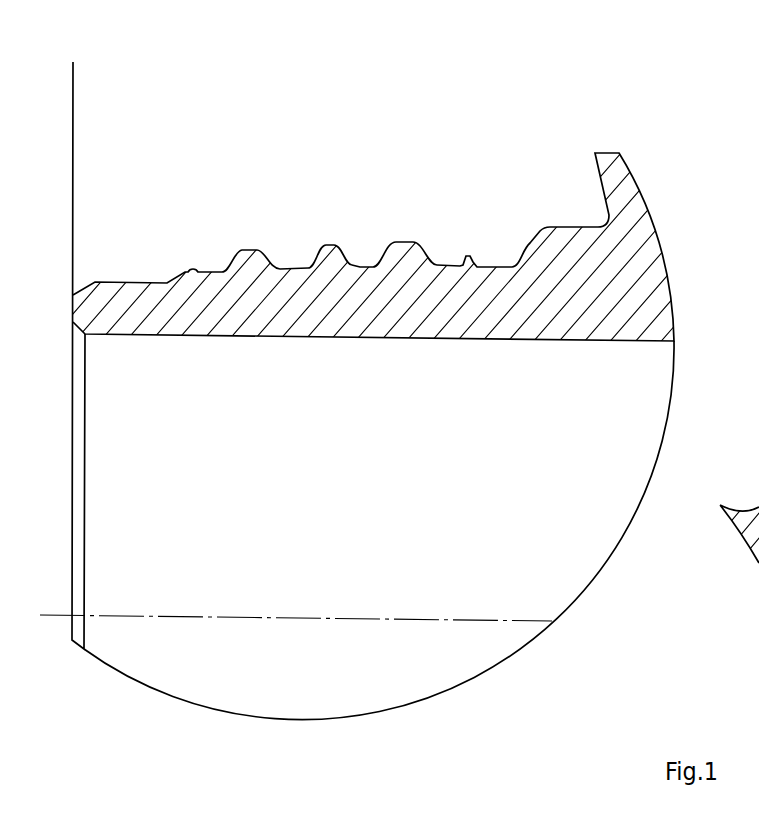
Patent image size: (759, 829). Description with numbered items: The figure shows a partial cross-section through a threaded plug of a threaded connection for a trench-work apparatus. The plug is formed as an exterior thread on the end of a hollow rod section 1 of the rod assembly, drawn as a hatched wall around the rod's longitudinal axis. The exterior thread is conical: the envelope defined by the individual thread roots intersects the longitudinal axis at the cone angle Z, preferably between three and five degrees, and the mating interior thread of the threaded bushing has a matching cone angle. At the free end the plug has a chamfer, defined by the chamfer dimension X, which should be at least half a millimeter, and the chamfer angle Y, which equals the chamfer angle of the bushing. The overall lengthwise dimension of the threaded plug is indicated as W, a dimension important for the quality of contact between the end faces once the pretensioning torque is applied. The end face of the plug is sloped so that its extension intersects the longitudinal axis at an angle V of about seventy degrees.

The section of the rod assembly 1 is at (636, 228).
The lengthwise dimension of the threaded plug W is at (594, 227).
The chamfer dimension of the threaded plug X is at (185, 272).
The chamfer angle Y is at (190, 277).
The cone angle Z is at (150, 279).
The end face angle V is at (574, 116).